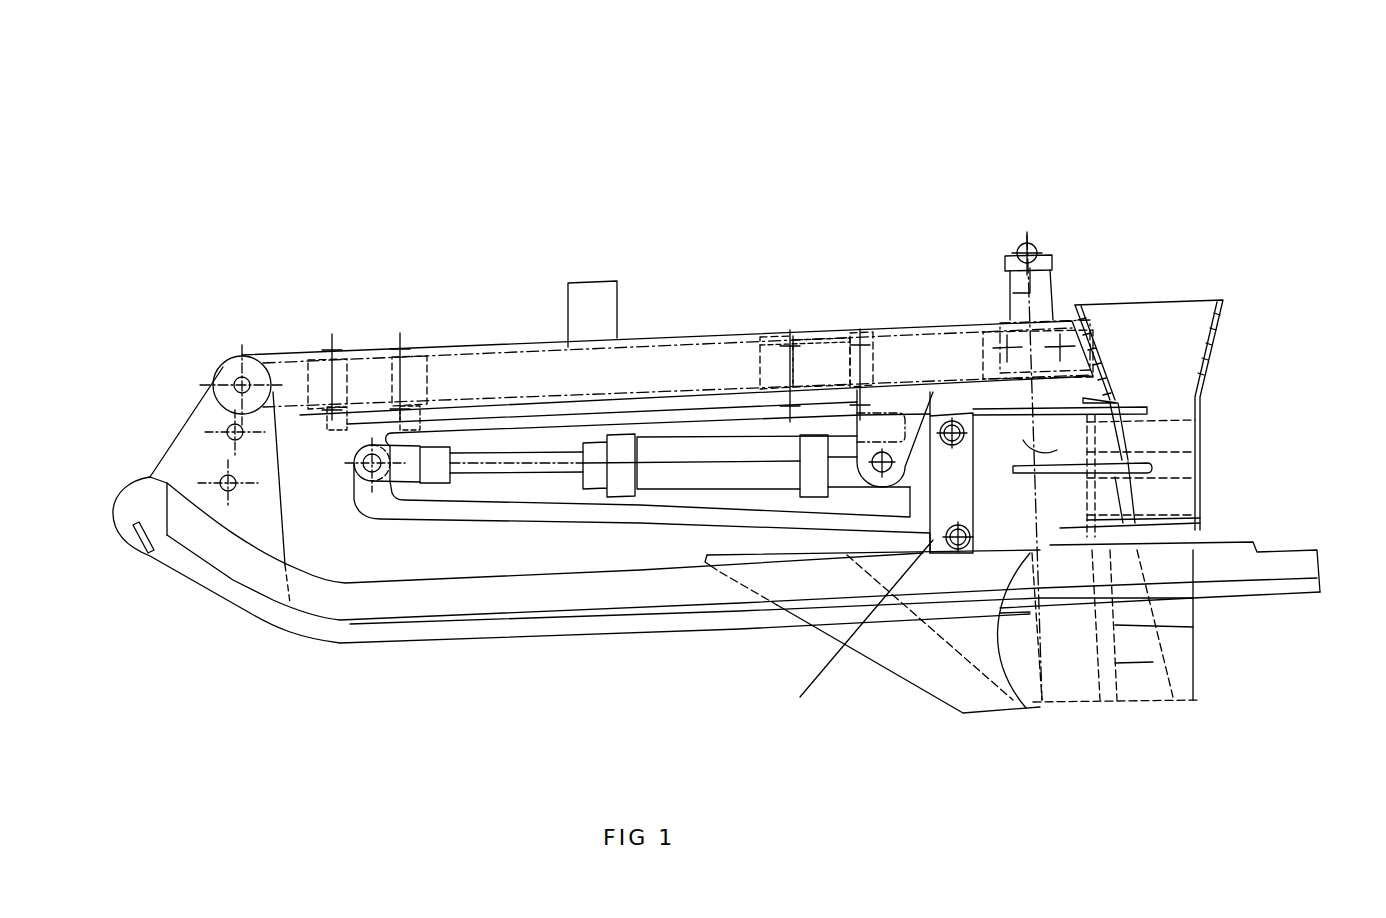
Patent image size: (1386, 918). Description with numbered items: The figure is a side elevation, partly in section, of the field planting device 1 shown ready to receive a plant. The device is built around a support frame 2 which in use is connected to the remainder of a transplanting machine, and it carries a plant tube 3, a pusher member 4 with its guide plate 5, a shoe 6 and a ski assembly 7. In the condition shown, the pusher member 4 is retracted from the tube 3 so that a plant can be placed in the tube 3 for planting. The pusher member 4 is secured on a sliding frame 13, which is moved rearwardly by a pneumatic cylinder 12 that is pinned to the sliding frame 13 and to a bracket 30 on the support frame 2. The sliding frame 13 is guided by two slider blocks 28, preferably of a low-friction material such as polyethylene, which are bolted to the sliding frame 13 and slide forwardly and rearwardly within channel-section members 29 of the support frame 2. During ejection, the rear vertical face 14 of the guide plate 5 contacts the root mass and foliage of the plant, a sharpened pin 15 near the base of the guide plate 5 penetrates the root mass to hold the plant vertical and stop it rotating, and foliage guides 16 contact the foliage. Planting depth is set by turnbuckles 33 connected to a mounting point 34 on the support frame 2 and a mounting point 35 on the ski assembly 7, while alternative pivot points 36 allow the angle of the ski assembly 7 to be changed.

The device 1 is at (1228, 176).
The support frame 2 is at (457, 345).
The plant tube 3 is at (1217, 338).
The pusher member 4 is at (1200, 462).
The guide plate 5 is at (1050, 454).
The shoe 6 is at (910, 685).
The ski assembly 7 is at (393, 645).
The pneumatic cylinder 12 is at (702, 486).
The sliding frame 13 is at (596, 524).
The rear vertical face 14 is at (1197, 627).
The sharpened pin 15 is at (1127, 664).
The foliage guides 16 is at (1117, 403).
The slider blocks 28 is at (368, 360).
The channel-section members 29 is at (765, 332).
The bracket 30 is at (883, 408).
The turnbuckles 33 is at (1030, 293).
The mounting point 34 is at (1033, 252).
The mounting point 35 is at (253, 342).
The pivot points 36 is at (235, 380).